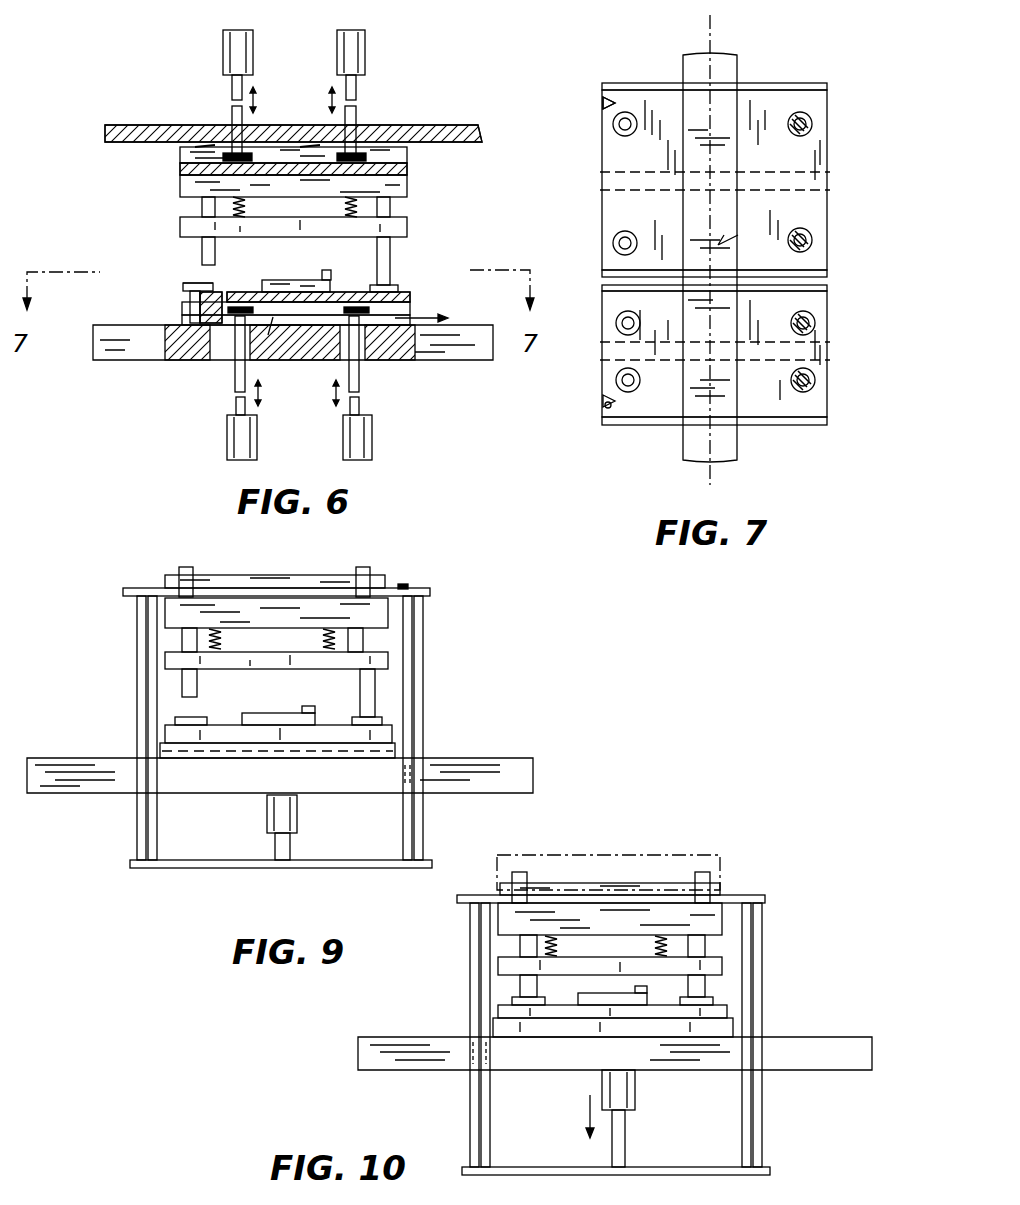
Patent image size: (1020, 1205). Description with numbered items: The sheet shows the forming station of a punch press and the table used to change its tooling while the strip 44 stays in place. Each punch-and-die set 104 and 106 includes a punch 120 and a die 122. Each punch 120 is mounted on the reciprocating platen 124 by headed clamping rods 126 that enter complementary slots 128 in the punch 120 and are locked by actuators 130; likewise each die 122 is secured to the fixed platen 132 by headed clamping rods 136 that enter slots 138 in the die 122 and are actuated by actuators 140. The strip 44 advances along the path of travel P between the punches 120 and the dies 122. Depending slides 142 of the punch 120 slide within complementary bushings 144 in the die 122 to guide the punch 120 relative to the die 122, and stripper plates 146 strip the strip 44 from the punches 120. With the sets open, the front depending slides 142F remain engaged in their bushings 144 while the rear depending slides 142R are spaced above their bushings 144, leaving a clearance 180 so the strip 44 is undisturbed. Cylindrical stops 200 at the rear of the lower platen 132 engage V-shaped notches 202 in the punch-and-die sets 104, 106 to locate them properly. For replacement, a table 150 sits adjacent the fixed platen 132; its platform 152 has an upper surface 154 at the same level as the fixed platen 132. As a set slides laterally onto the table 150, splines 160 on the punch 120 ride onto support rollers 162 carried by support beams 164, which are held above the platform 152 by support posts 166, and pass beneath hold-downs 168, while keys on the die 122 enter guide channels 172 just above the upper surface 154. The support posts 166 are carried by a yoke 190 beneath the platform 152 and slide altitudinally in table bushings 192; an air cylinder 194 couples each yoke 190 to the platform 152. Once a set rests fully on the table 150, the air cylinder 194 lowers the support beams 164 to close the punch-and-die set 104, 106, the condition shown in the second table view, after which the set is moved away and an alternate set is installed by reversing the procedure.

In FIG. 6, the strip 44 is at (313, 276).
In FIG. 7, the strip 44 is at (716, 240).
In FIG. 9, the strip 44 is at (278, 715).
In FIG. 10, the strip 44 is at (612, 995).
In FIG. 7, the punch-and-die set 104 is at (738, 429).
In FIG. 7, the punch-and-die set 106 is at (773, 92).
In FIG. 6, the punch 120 is at (185, 188).
In FIG. 9, the punch 120 is at (390, 618).
In FIG. 10, the punch 120 is at (668, 855).
In FIG. 6, the die 122 is at (410, 300).
In FIG. 7, the die 122 is at (657, 72).
In FIG. 9, the die 122 is at (240, 761).
In FIG. 10, the die 122 is at (728, 1011).
In FIG. 6, the reciprocating platen 124 is at (117, 143).
In FIG. 6, the headed clamping rods 126 is at (232, 108).
In FIG. 6, the slots 128 is at (407, 160).
In FIG. 6, the actuators 130 is at (337, 44).
In FIG. 6, the fixed platen 132 is at (96, 362).
In FIG. 6, the headed clamping rods 136 is at (350, 370).
In FIG. 7, the headed clamping rods 136 is at (600, 172).
In FIG. 6, the slots 138 is at (294, 338).
In FIG. 7, the slots 138 is at (600, 190).
In FIG. 6, the actuators 140 is at (343, 437).
In FIG. 6, the depending slides 142 is at (203, 207).
In FIG. 9, the depending slides 142 is at (272, 640).
In FIG. 10, the depending slides 142 is at (612, 946).
In FIG. 6, the rear depending slides 142R is at (203, 252).
In FIG. 9, the rear depending slides 142R is at (198, 688).
In FIG. 10, the rear depending slides 142R is at (528, 986).
In FIG. 6, the front depending slides 142F is at (391, 255).
In FIG. 7, the front depending slides 142F is at (790, 126).
In FIG. 9, the front depending slides 142F is at (376, 695).
In FIG. 10, the front depending slides 142F is at (696, 986).
In FIG. 6, the bushings 144 is at (392, 286).
In FIG. 7, the bushings 144 is at (626, 136).
In FIG. 9, the bushings 144 is at (360, 717).
In FIG. 10, the bushings 144 is at (612, 1001).
In FIG. 9, the stripper plates 146 is at (386, 666).
In FIG. 10, the stripper plates 146 is at (610, 966).
In FIG. 9, the table 150 is at (506, 755).
In FIG. 10, the table 150 is at (815, 1034).
In FIG. 9, the platform 152 is at (534, 772).
In FIG. 10, the platform 152 is at (797, 1060).
In FIG. 9, the upper surface 154 is at (76, 758).
In FIG. 10, the upper surface 154 is at (441, 1035).
In FIG. 9, the splines 160 is at (272, 575).
In FIG. 10, the splines 160 is at (592, 883).
In FIG. 9, the support rollers 162 is at (404, 584).
In FIG. 9, the support beams 164 is at (430, 591).
In FIG. 10, the support beams 164 is at (611, 899).
In FIG. 9, the support posts 166 is at (140, 655).
In FIG. 10, the support posts 166 is at (475, 945).
In FIG. 9, the hold-downs 168 is at (185, 567).
In FIG. 10, the hold-downs 168 is at (522, 872).
In FIG. 9, the guide channels 172 is at (288, 759).
In FIG. 6, the clearance 180 is at (203, 284).
In FIG. 9, the yoke 190 is at (330, 868).
In FIG. 10, the yoke 190 is at (650, 1167).
In FIG. 9, the table bushings 192 is at (425, 782).
In FIG. 10, the table bushings 192 is at (466, 1076).
In FIG. 9, the air cylinder 194 is at (298, 816).
In FIG. 10, the air cylinder 194 is at (636, 1090).
In FIG. 6, the cylindrical stops 200 is at (186, 362).
In FIG. 7, the cylindrical stops 200 is at (604, 110).
In FIG. 6, the V-shaped notches 202 is at (166, 328).
In FIG. 7, the V-shaped notches 202 is at (603, 102).